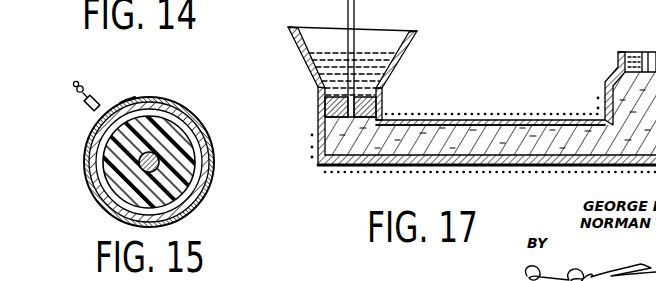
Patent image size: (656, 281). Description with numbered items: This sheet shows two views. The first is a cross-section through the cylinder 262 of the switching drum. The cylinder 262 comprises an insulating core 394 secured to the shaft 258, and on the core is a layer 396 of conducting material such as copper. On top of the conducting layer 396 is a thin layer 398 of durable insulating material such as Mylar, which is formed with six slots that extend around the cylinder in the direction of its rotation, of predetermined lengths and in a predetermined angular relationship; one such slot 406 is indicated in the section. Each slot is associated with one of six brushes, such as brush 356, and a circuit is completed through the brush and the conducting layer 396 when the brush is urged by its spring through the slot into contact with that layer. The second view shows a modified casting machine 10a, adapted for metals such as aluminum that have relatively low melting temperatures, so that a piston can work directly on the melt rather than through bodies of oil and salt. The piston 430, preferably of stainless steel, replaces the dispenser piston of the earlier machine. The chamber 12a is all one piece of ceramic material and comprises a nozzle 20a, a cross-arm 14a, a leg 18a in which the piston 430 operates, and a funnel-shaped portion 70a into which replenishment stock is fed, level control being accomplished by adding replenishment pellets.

In FIG. 15, the cylinder 262 is at (200, 74).
In FIG. 15, the thin layer of durable insulating material 398 is at (202, 194).
In FIG. 15, the layer or coating of conducting material 396 is at (193, 126).
In FIG. 15, the insulating core 394 is at (186, 158).
In FIG. 15, the shaft 258 is at (138, 164).
In FIG. 15, the slot 406 is at (133, 84).
In FIG. 15, the brush 356 is at (88, 110).
In FIG. 17, the machine 10a is at (528, 97).
In FIG. 17, the cross-arm 14a is at (463, 168).
In FIG. 17, the chamber 12a is at (443, 114).
In FIG. 17, the funnel-shaped portion 70a is at (290, 40).
In FIG. 17, the piston 430 is at (348, 12).
In FIG. 17, the leg 18a is at (322, 104).
In FIG. 17, the nozzle 20a is at (618, 53).